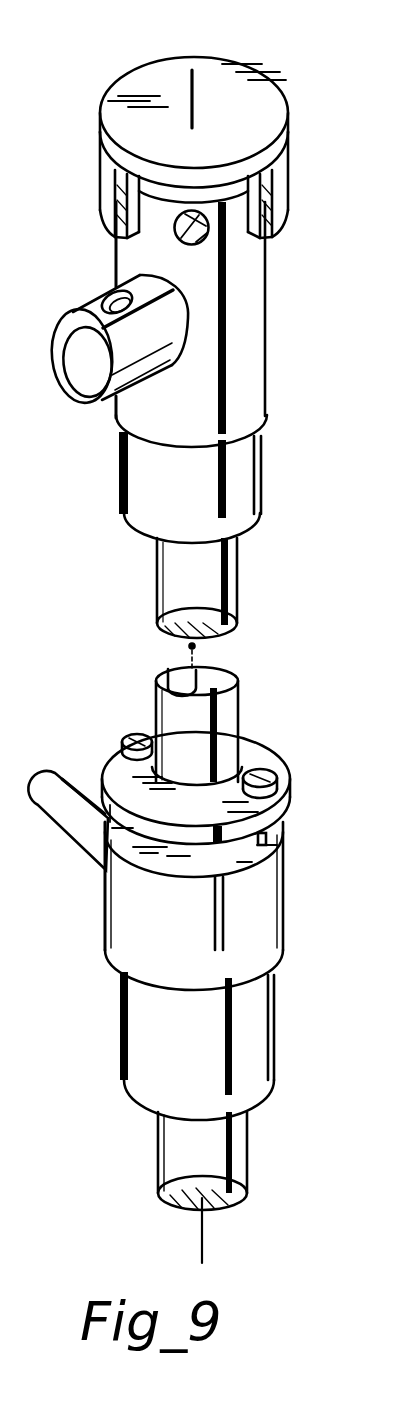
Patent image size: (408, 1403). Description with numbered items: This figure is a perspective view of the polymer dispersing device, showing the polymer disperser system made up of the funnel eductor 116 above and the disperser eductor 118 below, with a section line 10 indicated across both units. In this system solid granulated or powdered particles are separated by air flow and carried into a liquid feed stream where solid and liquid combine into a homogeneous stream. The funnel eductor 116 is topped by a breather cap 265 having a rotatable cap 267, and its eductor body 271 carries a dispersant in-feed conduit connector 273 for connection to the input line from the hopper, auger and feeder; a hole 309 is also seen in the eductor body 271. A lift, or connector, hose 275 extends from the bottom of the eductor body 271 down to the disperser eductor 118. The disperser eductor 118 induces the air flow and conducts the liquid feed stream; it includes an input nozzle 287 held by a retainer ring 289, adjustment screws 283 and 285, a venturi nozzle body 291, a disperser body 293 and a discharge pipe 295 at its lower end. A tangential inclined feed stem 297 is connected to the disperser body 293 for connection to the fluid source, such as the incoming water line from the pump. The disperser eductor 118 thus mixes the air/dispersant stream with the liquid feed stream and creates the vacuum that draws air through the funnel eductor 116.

The section line 10- 10 is at (200, 92).
The funnel eductor 116 is at (330, 349).
The disperser eductor 118 is at (365, 866).
The breather cap 265 is at (267, 92).
The rotatable cap 267 is at (285, 178).
The eductor body 271 is at (267, 283).
The dispersant in-feed conduit connector 273 is at (92, 312).
The lift hose 275 is at (239, 564).
The adjustment screw 283 is at (280, 791).
The adjustment screw 285 is at (136, 733).
The input nozzle 287 is at (250, 745).
The retainer ring 289 is at (278, 780).
The venturi nozzle body 291 is at (107, 771).
The disperser body 293 is at (286, 937).
The discharge pipe 295 is at (250, 1143).
The tangential inclined feed stem 297 is at (87, 836).
The screw hole 309 is at (206, 240).